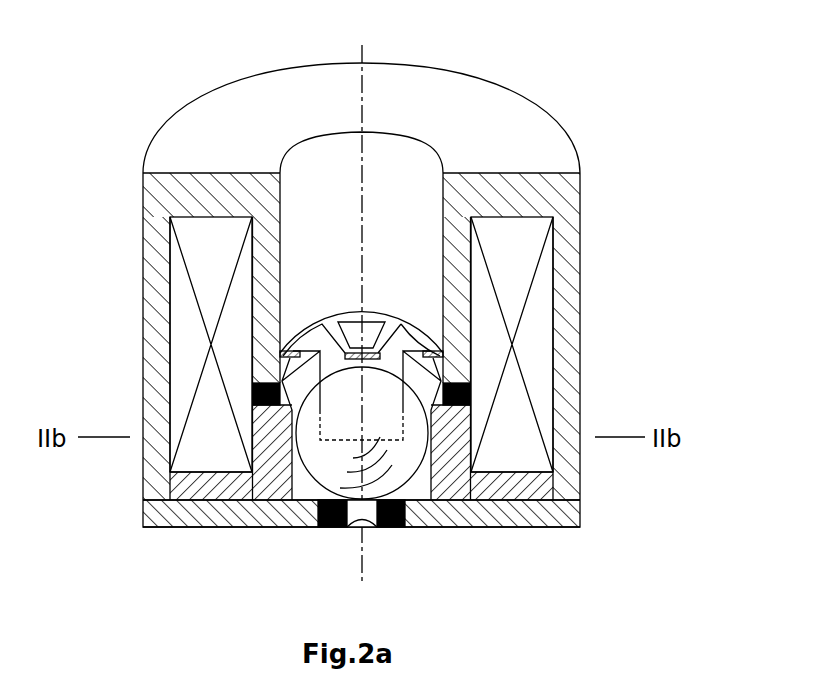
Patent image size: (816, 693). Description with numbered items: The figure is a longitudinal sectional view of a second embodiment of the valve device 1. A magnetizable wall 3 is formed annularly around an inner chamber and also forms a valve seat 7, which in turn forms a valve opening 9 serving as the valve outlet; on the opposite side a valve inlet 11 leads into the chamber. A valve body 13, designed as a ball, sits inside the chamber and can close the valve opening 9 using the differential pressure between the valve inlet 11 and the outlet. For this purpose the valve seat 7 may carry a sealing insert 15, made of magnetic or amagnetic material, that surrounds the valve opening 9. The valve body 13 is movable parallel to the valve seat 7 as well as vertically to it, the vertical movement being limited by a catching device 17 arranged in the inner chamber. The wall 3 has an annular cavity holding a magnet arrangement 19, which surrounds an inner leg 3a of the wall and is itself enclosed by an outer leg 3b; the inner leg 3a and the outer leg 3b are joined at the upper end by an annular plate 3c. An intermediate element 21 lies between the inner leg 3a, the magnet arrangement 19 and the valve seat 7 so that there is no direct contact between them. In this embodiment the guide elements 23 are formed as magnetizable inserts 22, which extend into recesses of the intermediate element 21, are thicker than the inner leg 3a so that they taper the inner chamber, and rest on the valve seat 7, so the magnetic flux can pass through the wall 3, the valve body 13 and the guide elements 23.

The valve device 1 is at (598, 78).
The magnetizable wall 3 is at (606, 276).
The inner leg 3a is at (270, 302).
The outer leg 3b is at (155, 377).
The annular plate 3c is at (197, 197).
The valve seat 7 is at (426, 536).
The valve opening 9 is at (355, 532).
The valve inlet 11 is at (301, 138).
The valve body 13 is at (325, 452).
The sealing insert 15 is at (393, 528).
The catching device 17 is at (302, 328).
The magnet arrangement 19 is at (195, 260).
The intermediate element 21 is at (258, 398).
The magnetizable inserts 22 is at (205, 485).
The guide elements 23 is at (275, 445).